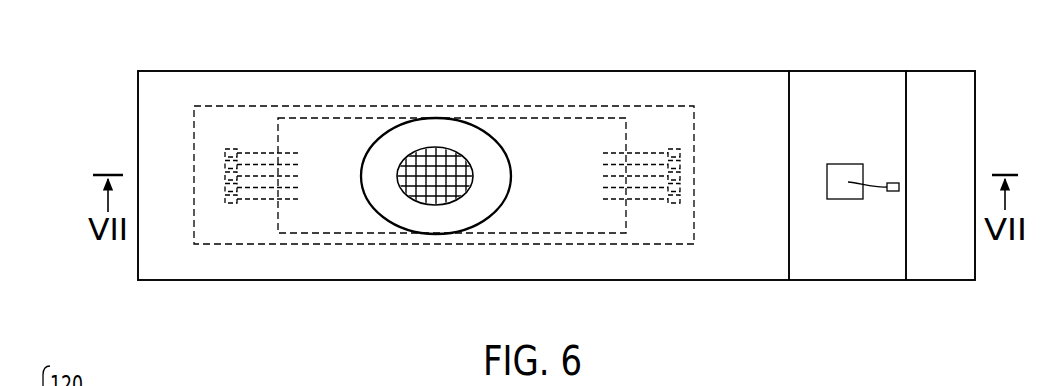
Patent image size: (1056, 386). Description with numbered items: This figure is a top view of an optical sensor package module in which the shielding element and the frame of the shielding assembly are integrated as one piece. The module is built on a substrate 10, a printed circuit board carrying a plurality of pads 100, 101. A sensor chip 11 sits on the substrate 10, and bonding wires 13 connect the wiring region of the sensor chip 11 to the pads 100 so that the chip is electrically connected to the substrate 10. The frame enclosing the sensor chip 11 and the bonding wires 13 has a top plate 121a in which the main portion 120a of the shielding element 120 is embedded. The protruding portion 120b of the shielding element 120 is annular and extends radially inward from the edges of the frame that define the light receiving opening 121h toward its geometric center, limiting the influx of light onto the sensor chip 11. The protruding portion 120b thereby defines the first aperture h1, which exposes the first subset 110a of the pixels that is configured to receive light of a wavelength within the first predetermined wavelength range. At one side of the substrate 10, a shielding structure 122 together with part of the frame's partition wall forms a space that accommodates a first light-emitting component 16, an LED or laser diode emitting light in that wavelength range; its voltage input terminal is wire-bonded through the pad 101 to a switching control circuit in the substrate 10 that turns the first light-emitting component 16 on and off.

The substrate 10 is at (851, 262).
The sensor chip 11 is at (552, 118).
The bonding wires 13 is at (642, 153).
The first light-emitting component 16 is at (837, 177).
The pads 100 is at (225, 142).
The pad 101 is at (899, 186).
The first subset of the pixels 110a is at (450, 193).
The shielding element 120 is at (500, 33).
The main portion 120a is at (350, 132).
The protruding portion 120b is at (472, 142).
The top plate 121a is at (713, 102).
The light receiving opening 121h is at (365, 206).
The shielding structure 122 is at (957, 114).
The first aperture h1 is at (429, 210).